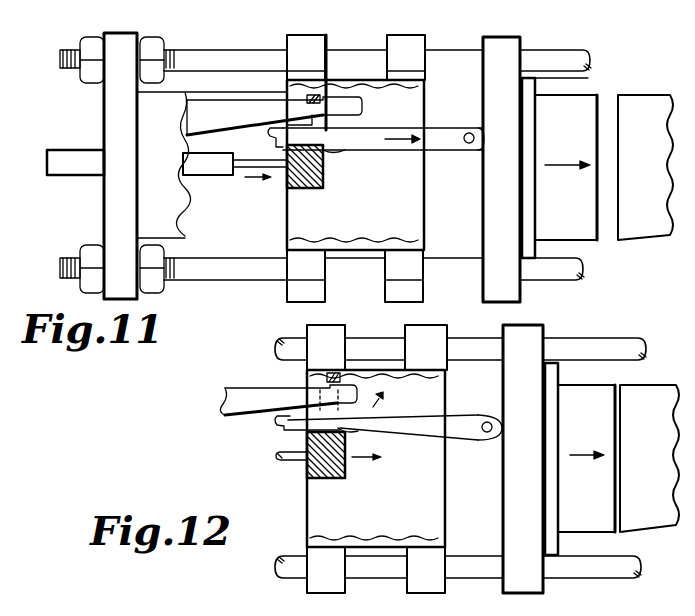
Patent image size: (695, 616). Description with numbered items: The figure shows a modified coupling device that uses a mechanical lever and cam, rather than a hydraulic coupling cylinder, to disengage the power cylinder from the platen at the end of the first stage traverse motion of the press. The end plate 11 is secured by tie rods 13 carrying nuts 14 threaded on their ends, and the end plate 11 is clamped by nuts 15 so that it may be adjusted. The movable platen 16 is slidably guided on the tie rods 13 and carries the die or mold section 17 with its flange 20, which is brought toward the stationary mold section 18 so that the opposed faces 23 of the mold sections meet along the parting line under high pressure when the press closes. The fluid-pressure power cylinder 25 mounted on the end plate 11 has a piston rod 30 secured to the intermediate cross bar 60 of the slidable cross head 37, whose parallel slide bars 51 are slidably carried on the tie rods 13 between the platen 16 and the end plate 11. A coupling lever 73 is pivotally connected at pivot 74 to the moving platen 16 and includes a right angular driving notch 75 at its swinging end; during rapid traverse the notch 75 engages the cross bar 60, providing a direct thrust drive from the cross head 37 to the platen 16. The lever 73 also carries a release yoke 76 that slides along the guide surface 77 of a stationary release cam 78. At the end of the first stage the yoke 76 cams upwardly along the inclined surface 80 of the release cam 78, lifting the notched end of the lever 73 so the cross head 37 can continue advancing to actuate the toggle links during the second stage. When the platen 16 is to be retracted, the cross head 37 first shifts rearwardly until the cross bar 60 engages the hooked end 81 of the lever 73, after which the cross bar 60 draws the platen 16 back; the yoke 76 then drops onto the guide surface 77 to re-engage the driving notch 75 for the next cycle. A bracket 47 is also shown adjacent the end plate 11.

In FIG. 11, the end plate 11 is at (110, 211).
In FIG. 11, the tie rods 13 is at (243, 50).
In FIG. 12, the tie rods 13 is at (625, 345).
In FIG. 11, the nuts 14 is at (92, 44).
In FIG. 11, the nuts 15 is at (152, 42).
In FIG. 11, the movable platen 16 is at (506, 42).
In FIG. 12, the movable platen 16 is at (530, 333).
In FIG. 11, the die or mold section 17 is at (582, 104).
In FIG. 12, the die or mold section 17 is at (604, 392).
In FIG. 11, the stationary mold section 18 is at (651, 108).
In FIG. 12, the stationary mold section 18 is at (647, 396).
In FIG. 11, the flange 20 is at (529, 228).
In FIG. 12, the flange 20 is at (549, 415).
In FIG. 11, the opposed faces 23 is at (603, 220).
In FIG. 12, the opposed faces 23 is at (621, 433).
In FIG. 11, the fluid-pressure power cylinder 25 is at (54, 183).
In FIG. 11, the piston rod 30 is at (237, 176).
In FIG. 12, the piston rod 30 is at (292, 462).
In FIG. 11, the cross head 37 is at (331, 37).
In FIG. 12, the cross head 37 is at (401, 321).
In FIG. 11, the bracket 47 is at (186, 238).
In FIG. 11, the slide bars 51 is at (304, 40).
In FIG. 12, the slide bars 51 is at (376, 459).
In FIG. 11, the cross bar 60 is at (300, 190).
In FIG. 12, the cross bar 60 is at (325, 480).
In FIG. 11, the coupling lever 73 is at (383, 150).
In FIG. 12, the coupling lever 73 is at (432, 420).
In FIG. 11, the pivot 74 is at (469, 133).
In FIG. 12, the pivot 74 is at (487, 422).
In FIG. 11, the driving notch 75 is at (343, 151).
In FIG. 12, the driving notch 75 is at (356, 432).
In FIG. 11, the release yoke 76 is at (311, 95).
In FIG. 12, the release yoke 76 is at (334, 373).
In FIG. 11, the guide surface 77 is at (250, 104).
In FIG. 12, the guide surface 77 is at (278, 392).
In FIG. 11, the release cam 78 is at (206, 118).
In FIG. 12, the release cam 78 is at (246, 396).
In FIG. 11, the inclined surface 80 is at (333, 98).
In FIG. 12, the inclined surface 80 is at (312, 388).
In FIG. 11, the hooked end 81 is at (272, 139).
In FIG. 12, the hooked end 81 is at (285, 421).